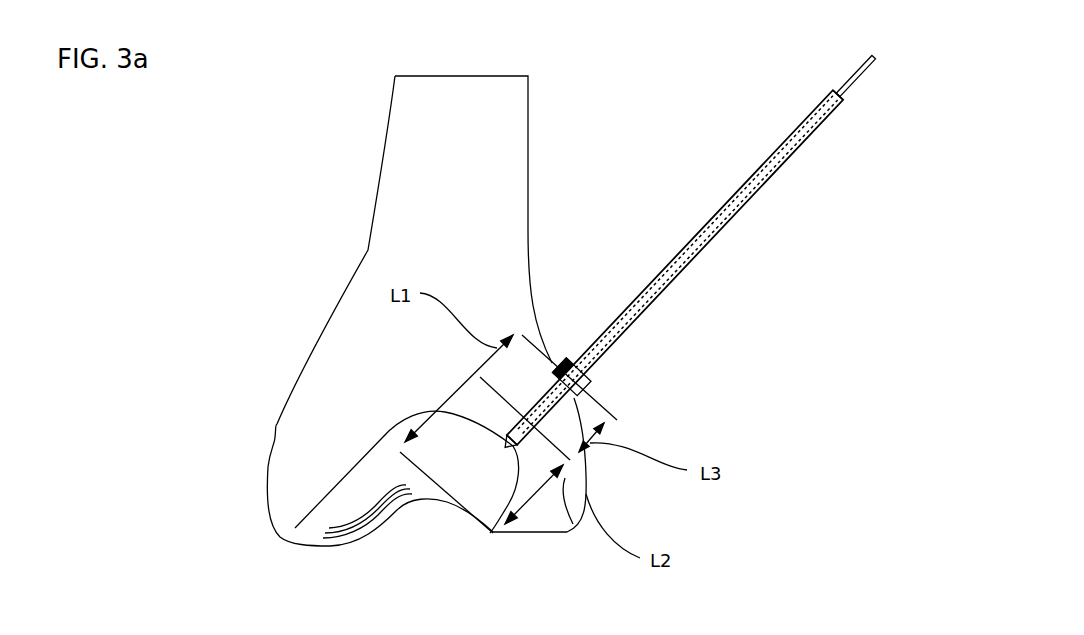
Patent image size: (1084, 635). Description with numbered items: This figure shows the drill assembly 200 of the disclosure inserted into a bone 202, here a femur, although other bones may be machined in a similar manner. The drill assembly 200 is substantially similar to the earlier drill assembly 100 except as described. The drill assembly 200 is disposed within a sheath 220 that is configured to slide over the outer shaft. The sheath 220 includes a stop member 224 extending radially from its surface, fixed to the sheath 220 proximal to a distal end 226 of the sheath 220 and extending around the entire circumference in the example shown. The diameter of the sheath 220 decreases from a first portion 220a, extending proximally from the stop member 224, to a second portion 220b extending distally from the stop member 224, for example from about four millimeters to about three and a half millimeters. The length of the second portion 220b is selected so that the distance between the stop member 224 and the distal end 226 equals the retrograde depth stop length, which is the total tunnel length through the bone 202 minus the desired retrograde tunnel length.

The drill assembly 100 is at (853, 73).
The drill assembly 200 is at (703, 180).
The bone 202 is at (312, 365).
The sheath 220 is at (677, 277).
The first portion of the sheath 220a is at (798, 152).
The second portion of the sheath 220b is at (522, 428).
The stop member 224 is at (568, 362).
The distal end of the sheath 226 is at (462, 497).